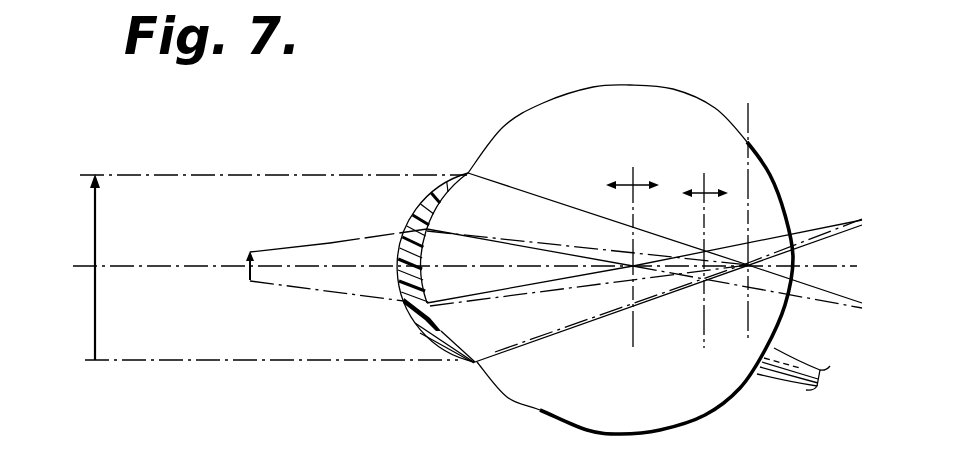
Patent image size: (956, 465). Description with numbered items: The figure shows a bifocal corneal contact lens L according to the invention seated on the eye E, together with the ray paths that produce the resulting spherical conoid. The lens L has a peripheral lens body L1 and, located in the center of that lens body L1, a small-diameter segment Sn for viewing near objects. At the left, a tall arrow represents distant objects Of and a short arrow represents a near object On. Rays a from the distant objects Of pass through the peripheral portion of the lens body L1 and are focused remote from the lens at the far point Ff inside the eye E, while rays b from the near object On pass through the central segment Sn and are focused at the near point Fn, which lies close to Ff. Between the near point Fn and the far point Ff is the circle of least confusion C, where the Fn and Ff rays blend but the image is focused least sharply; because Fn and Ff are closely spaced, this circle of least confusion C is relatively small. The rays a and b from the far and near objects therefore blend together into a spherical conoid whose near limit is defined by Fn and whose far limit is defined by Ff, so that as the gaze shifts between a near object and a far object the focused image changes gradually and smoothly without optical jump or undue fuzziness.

The distant objects Of is at (98, 338).
The near object On is at (253, 273).
The rays from near object b is at (289, 245).
The rays from distant objects a is at (578, 212).
The near viewing segment Sn is at (419, 250).
The bifocal corneal contact lens L is at (400, 320).
The lens body L1 is at (420, 330).
The eye E is at (508, 399).
The near focal point Fn is at (633, 168).
The circle of least confusion C is at (703, 173).
The far focal point Ff is at (748, 118).